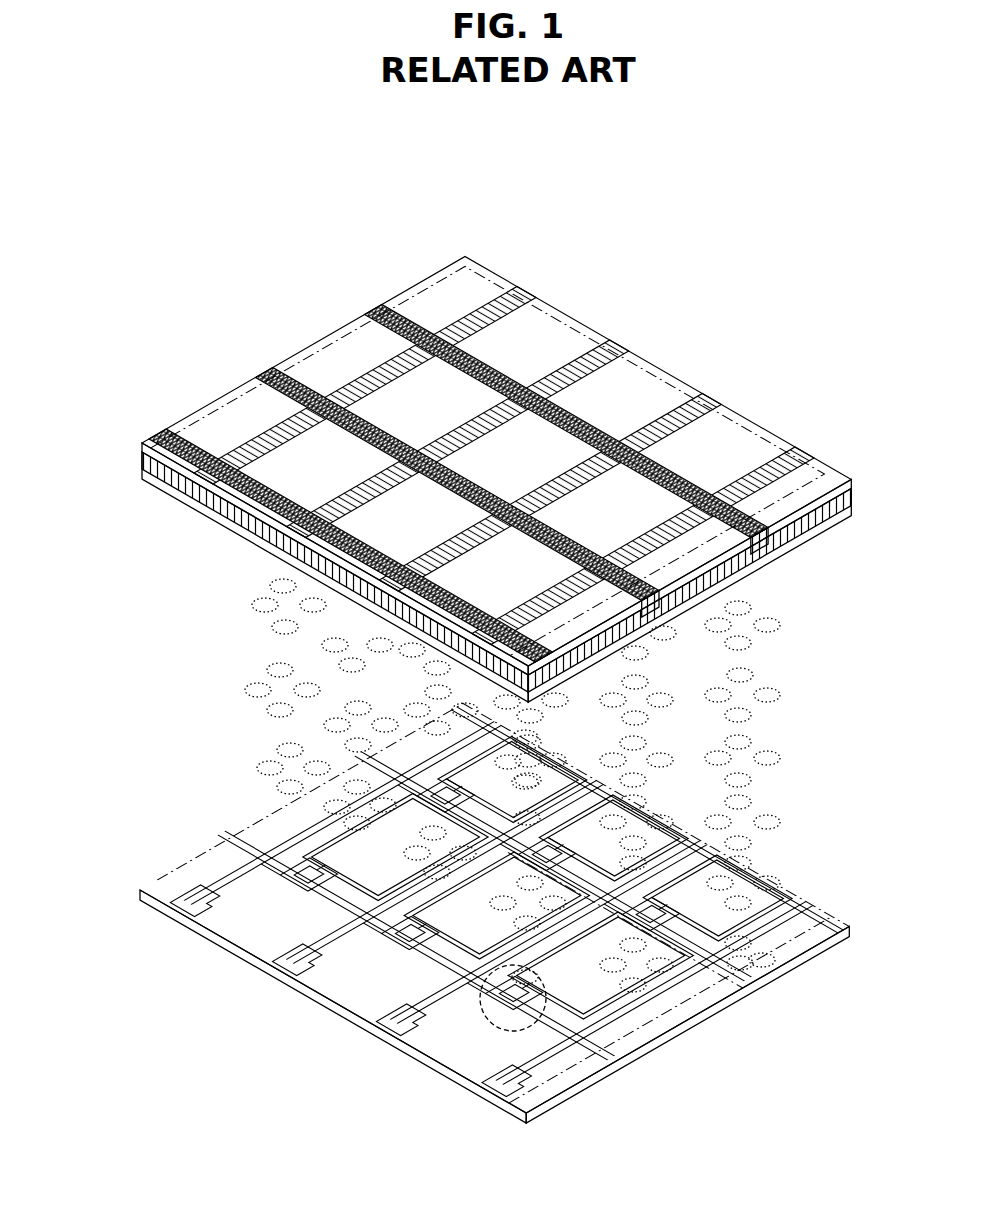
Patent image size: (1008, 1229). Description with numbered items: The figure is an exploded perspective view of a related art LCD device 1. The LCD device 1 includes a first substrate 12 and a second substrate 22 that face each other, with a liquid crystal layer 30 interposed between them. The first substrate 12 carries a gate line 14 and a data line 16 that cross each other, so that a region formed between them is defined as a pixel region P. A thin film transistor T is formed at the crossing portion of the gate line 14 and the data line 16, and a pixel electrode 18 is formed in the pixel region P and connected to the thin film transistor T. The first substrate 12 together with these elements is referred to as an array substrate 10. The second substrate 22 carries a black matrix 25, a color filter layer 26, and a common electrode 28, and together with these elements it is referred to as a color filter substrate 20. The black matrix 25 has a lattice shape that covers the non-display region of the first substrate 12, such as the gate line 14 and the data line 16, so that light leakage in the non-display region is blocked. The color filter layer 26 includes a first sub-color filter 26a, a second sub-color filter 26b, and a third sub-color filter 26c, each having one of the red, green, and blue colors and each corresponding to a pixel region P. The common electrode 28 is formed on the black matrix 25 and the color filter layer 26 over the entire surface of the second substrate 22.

The LCD device 1 is at (808, 225).
The array substrate 10 is at (220, 806).
The first substrate 12 is at (514, 1115).
The gate line 14 is at (497, 908).
The data line 16 is at (484, 906).
The pixel electrode 18 is at (547, 878).
The color filter substrate 20 is at (242, 308).
The second substrate 22 is at (142, 447).
The black matrix 25 is at (458, 484).
The color filter layer 26 is at (486, 454).
The first sub-color filter 26a is at (479, 434).
The second sub-color filter 26b is at (479, 433).
The third sub-color filter 26c is at (479, 434).
The common electrode 28 is at (142, 481).
The liquid crystal layer 30 is at (774, 756).
The pixel region P is at (496, 905).
The TFT T is at (471, 888).